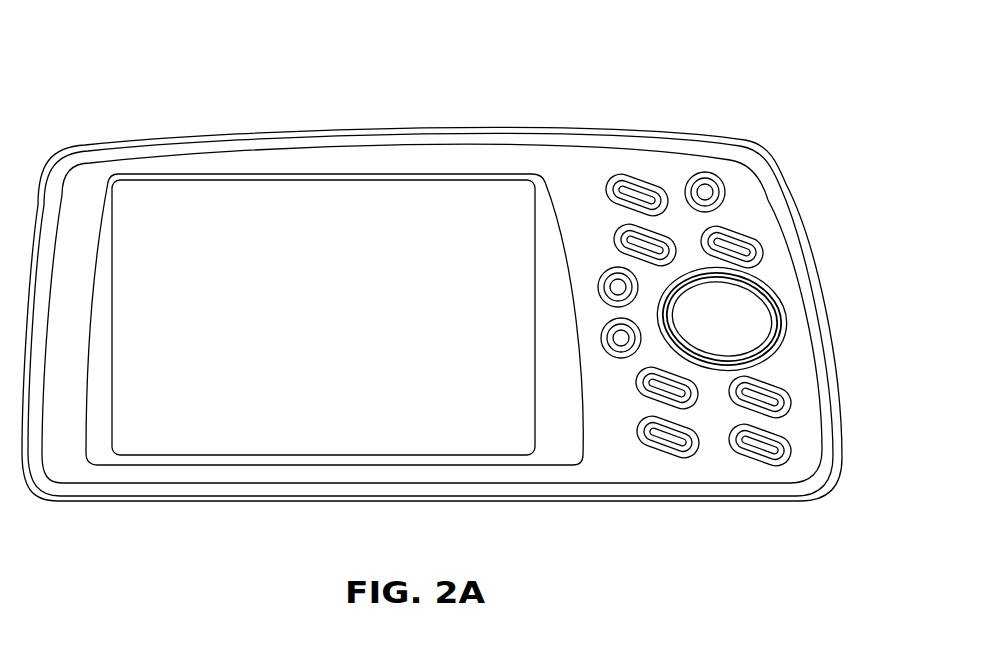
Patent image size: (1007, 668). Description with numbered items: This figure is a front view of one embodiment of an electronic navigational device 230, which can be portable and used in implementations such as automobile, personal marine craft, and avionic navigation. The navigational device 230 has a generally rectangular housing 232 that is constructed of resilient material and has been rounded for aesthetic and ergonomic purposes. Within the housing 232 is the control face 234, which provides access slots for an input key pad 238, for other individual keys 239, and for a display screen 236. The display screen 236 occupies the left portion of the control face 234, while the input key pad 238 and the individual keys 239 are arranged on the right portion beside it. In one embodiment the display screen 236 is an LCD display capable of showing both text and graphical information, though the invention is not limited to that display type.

The electronic navigational device 230 is at (640, 85).
The housing 232 is at (272, 128).
The control face 234 is at (402, 157).
The display screen 236 is at (200, 441).
The input key pad 238 is at (757, 325).
The individual keys 239 is at (733, 246).